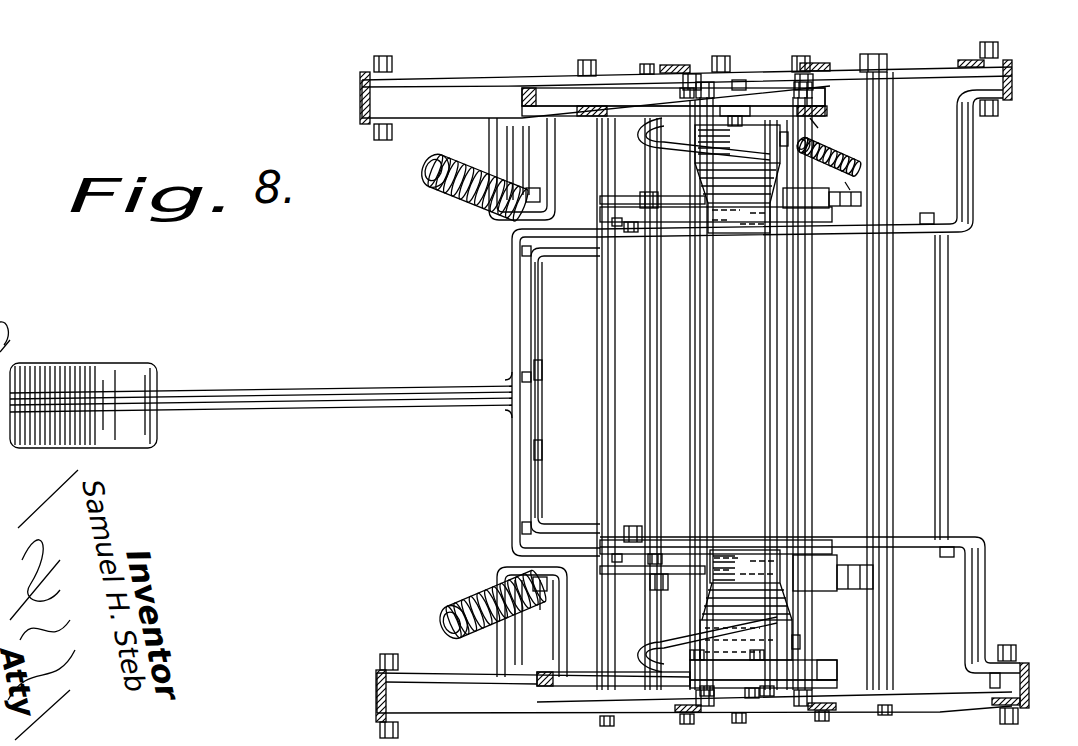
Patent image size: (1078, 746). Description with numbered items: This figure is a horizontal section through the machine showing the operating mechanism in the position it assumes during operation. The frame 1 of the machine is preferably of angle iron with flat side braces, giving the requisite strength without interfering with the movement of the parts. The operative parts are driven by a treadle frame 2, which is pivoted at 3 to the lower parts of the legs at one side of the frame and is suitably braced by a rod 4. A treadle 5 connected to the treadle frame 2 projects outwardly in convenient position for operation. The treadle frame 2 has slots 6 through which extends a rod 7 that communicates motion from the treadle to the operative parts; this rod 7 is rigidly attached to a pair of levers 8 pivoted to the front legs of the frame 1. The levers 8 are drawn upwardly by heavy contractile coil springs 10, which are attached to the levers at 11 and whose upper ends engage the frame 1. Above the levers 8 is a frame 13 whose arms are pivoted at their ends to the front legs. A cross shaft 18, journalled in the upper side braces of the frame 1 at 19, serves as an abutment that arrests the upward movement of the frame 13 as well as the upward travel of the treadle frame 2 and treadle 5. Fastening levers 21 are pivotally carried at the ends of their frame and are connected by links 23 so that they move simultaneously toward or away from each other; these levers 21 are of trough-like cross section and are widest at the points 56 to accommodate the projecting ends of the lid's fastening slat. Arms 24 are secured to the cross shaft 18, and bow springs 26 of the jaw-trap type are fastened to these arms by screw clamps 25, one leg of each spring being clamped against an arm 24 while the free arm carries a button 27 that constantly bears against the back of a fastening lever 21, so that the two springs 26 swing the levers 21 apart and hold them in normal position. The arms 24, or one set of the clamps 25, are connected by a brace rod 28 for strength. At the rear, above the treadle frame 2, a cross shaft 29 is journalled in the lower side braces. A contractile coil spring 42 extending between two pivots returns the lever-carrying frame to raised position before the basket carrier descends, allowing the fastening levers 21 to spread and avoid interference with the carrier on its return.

The frame 1 is at (360, 98).
The treadle frame 2 is at (325, 404).
The pivot 3 is at (994, 116).
The rod 4 is at (948, 266).
The treadle 5 is at (83, 405).
The slots 6 is at (664, 226).
The rod 7 is at (652, 407).
The levers 8 is at (497, 222).
The contractile coil springs 10 is at (434, 178).
The spring attachment point 11 is at (542, 200).
The frame 13 is at (457, 110).
The cross shaft 18 is at (596, 354).
The journal 19 is at (612, 88).
The fastening levers 21 is at (743, 391).
The links 23 is at (706, 443).
The arms 24 is at (600, 116).
The screw clamps 25 is at (742, 82).
The bow springs 26 is at (668, 140).
The button 27 is at (760, 163).
The brace rod 28 is at (698, 366).
The cross shaft 29 is at (808, 302).
The contractile coil spring 42 is at (832, 142).
The widest points 56 is at (790, 152).